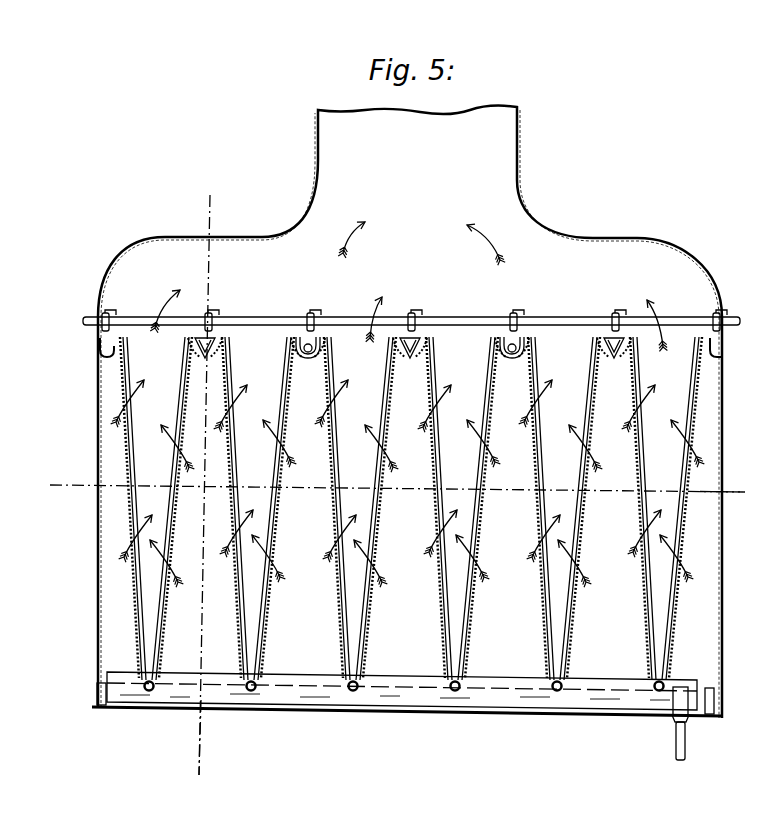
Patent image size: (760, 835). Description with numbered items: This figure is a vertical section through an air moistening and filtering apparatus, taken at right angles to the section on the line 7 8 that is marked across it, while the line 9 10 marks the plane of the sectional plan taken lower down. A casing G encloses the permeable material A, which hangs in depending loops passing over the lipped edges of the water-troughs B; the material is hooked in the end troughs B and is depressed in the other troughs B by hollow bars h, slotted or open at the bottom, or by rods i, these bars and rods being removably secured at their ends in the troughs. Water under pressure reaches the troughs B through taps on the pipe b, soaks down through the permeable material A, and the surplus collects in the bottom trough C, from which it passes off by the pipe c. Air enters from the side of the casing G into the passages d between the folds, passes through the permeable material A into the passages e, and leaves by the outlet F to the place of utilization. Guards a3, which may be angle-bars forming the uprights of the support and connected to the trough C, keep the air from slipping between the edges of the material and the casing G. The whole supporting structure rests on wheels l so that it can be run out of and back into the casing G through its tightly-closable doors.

The section line 7 is at (207, 474).
The section line 8 is at (196, 750).
The section line 9 is at (388, 483).
The section line 10 is at (730, 493).
The outlet pipe F is at (421, 213).
The hollow bars h is at (212, 324).
The water-supply pipe b is at (270, 328).
The rods i is at (313, 345).
The water-troughs B is at (429, 325).
The guards a3 is at (690, 392).
The passages e is at (407, 436).
The passages d is at (408, 510).
The casing G is at (97, 534).
The permeable material A is at (402, 514).
The surplus-water trough C is at (407, 708).
The pipe c is at (710, 691).
The wheels l is at (727, 708).